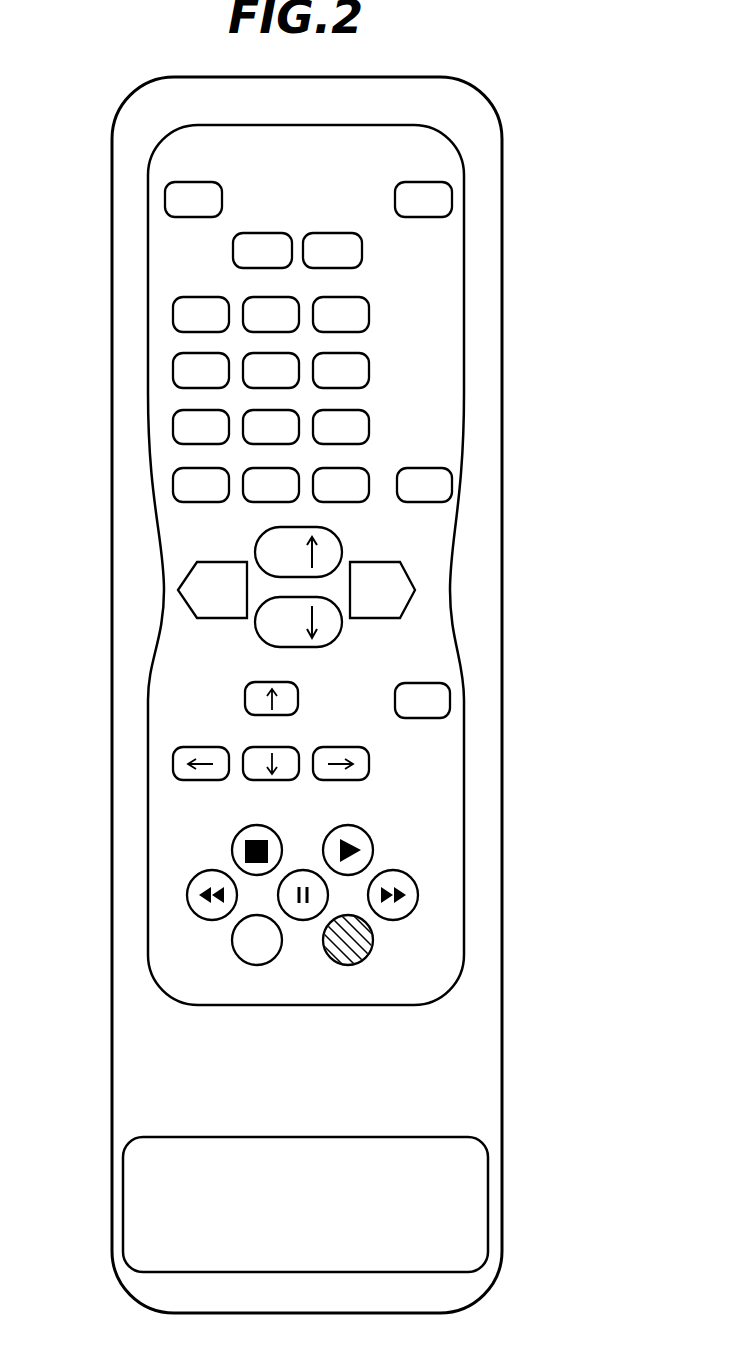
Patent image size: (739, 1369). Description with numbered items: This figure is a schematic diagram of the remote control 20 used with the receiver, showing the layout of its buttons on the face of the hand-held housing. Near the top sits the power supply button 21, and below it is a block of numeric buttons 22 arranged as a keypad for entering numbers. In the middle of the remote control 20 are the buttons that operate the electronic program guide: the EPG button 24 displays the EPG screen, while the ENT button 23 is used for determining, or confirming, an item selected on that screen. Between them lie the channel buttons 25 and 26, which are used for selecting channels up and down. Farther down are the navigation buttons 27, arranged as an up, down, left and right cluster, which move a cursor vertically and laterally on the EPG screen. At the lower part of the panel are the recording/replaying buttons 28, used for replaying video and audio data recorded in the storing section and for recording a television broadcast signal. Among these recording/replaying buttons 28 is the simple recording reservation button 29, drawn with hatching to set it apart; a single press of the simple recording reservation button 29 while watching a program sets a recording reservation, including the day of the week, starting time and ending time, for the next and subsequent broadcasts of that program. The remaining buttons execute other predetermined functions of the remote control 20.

The remote control 20 is at (555, 337).
The power supply button 21 is at (173, 198).
The numeric buttons 22 is at (101, 294).
The ENT button 23 is at (178, 590).
The EPG button 24 is at (415, 590).
The channel button 25 is at (340, 543).
The channel button 26 is at (258, 635).
The navigation buttons 27 is at (100, 681).
The recording/replaying buttons 28 is at (100, 826).
The simple recording reservation button 29 is at (373, 942).